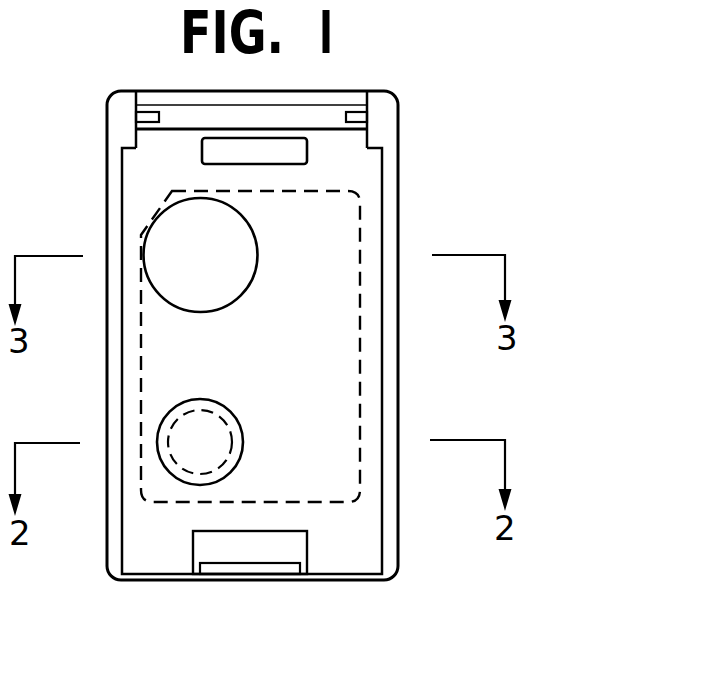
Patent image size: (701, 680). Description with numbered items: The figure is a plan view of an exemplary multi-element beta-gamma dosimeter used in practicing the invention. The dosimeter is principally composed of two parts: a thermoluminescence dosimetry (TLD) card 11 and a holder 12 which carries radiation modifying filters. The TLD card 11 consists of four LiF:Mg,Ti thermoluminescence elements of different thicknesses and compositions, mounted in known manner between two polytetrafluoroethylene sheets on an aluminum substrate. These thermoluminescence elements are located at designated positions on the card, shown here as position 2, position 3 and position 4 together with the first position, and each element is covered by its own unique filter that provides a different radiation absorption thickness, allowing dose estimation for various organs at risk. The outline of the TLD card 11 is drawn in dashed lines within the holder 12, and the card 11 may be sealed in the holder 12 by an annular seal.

The position 2 is at (201, 255).
The position 3 is at (200, 442).
The position 4 is at (299, 440).
The thermoluminescence dosimetry card 11 is at (360, 228).
The holder 12 is at (106, 568).